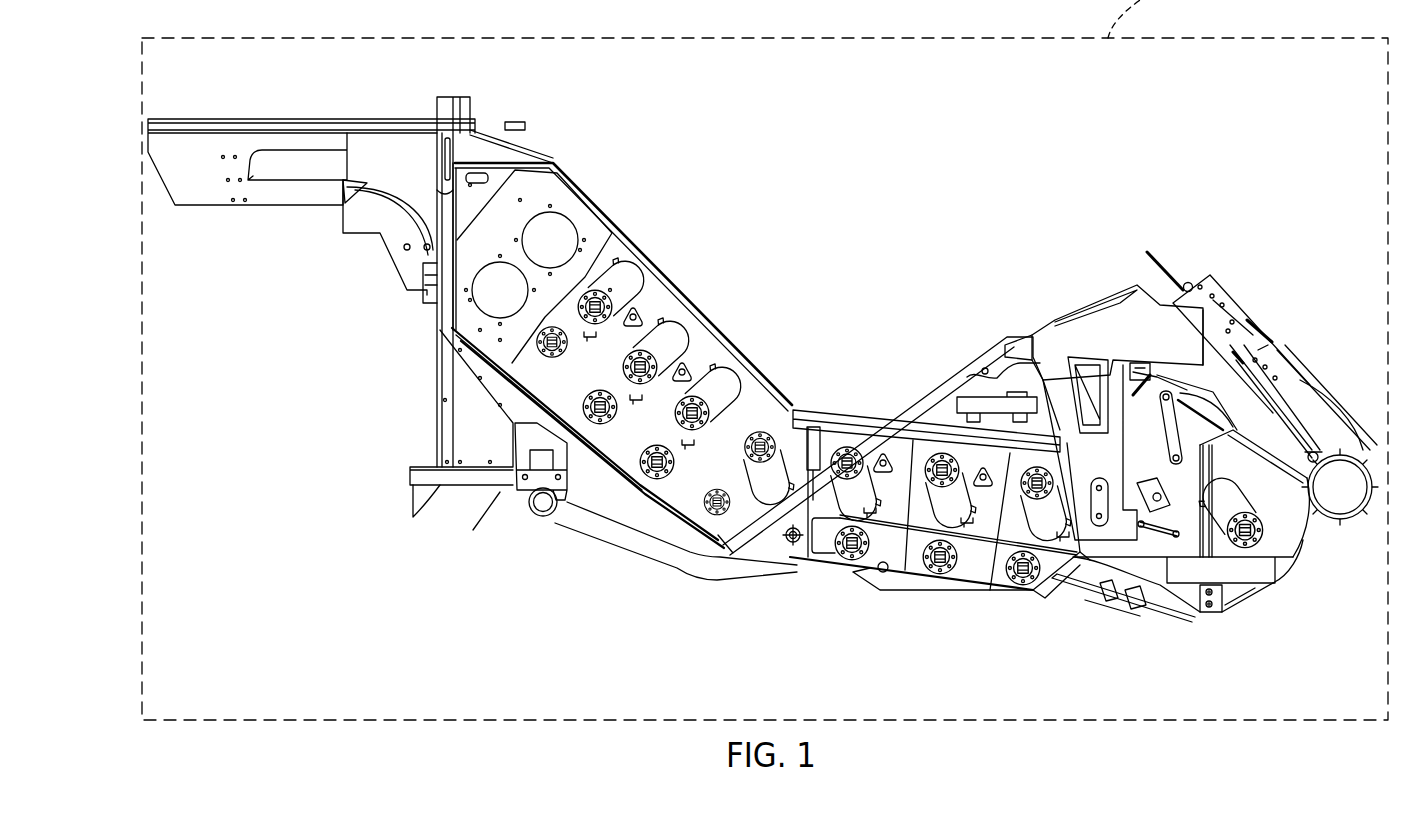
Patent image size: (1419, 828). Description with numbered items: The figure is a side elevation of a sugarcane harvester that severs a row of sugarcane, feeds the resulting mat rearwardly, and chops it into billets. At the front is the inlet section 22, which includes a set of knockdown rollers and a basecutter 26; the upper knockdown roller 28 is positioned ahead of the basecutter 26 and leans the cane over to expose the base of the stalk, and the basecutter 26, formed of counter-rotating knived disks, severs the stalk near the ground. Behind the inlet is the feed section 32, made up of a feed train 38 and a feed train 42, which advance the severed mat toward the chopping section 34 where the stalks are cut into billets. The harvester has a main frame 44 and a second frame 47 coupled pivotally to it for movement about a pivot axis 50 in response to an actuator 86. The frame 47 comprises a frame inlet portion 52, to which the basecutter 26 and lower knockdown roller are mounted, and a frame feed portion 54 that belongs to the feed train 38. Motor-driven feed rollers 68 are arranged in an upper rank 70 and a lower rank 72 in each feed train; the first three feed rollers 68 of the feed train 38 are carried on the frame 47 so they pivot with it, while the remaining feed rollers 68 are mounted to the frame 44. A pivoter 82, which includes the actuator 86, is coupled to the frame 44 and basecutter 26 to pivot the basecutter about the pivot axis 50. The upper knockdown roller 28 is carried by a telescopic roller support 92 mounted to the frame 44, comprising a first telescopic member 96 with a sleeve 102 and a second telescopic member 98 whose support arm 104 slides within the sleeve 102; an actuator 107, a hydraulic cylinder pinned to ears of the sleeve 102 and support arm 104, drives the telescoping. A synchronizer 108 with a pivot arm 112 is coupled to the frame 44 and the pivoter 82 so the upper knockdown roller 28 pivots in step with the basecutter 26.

The inlet section 22 is at (1270, 623).
The basecutter 26 is at (1137, 610).
The upper knockdown roller 28 is at (1342, 492).
The feed section 32 is at (795, 245).
The chopping section 34 is at (582, 215).
The feed train 38 is at (973, 597).
The feed train 42 is at (718, 307).
The frame 44 is at (642, 507).
The frame 47 is at (912, 577).
The pivot axis 50 is at (790, 543).
The frame inlet portion 52 is at (1290, 543).
The frame feed portion 54 is at (980, 573).
The feed rollers 68 is at (668, 402).
The upper rank 70 is at (1060, 480).
The lower rank 72 is at (1052, 590).
The pivoter 82 is at (1225, 400).
The actuator 86 is at (1143, 368).
The telescopic roller support 92 is at (1210, 263).
The first telescopic member 96 is at (1275, 345).
The second telescopic member 98 is at (1320, 403).
The sleeve 102 is at (1230, 307).
The support arm 104 is at (1323, 427).
The actuator 107 is at (1300, 377).
The synchronizer 108 is at (1273, 412).
The pivot arm 112 is at (1200, 377).